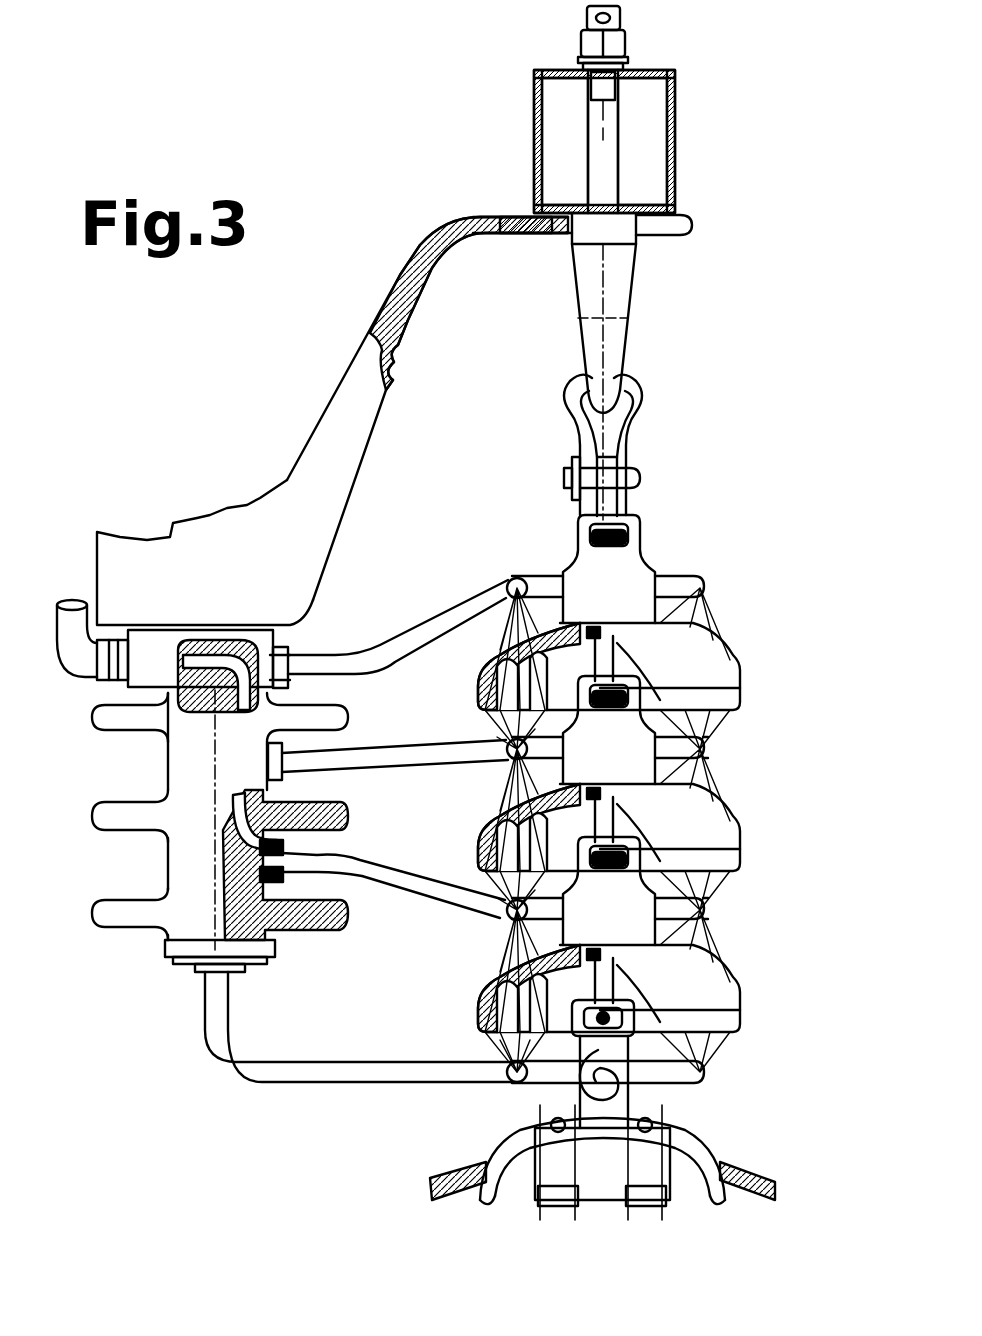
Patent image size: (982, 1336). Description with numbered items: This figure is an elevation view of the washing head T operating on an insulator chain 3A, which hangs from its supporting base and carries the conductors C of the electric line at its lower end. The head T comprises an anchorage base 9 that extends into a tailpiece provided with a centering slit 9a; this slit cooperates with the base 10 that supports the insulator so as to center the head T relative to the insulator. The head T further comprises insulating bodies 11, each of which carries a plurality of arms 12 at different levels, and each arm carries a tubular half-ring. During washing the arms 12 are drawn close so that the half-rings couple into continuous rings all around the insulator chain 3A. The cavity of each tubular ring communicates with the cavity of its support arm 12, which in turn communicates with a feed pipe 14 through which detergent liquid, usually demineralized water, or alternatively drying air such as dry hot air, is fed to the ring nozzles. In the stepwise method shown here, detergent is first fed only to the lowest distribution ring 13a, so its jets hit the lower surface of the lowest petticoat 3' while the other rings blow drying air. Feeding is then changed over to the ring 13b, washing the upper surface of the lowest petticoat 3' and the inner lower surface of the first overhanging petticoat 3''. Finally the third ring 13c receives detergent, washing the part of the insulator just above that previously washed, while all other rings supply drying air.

The washing head T is at (391, 211).
The anchorage base 9 is at (372, 422).
The centering slit 9a is at (560, 232).
The base supporting the pin insulator 10 is at (622, 282).
The insulator chain 3A is at (750, 668).
The first overhanging petticoat 3'' is at (642, 773).
The lowest petticoat 3' is at (637, 934).
The third ring 13c is at (705, 750).
The ring 13b is at (705, 908).
The lowest distribution ring 13a is at (708, 1074).
The feed pipe 14 is at (500, 1046).
The arms 12 is at (418, 760).
The insulating bodies 11 is at (190, 905).
The conductors C is at (448, 1172).